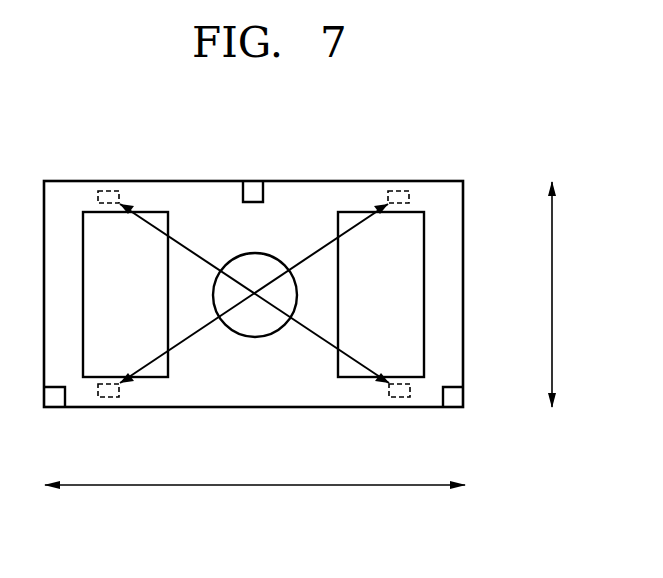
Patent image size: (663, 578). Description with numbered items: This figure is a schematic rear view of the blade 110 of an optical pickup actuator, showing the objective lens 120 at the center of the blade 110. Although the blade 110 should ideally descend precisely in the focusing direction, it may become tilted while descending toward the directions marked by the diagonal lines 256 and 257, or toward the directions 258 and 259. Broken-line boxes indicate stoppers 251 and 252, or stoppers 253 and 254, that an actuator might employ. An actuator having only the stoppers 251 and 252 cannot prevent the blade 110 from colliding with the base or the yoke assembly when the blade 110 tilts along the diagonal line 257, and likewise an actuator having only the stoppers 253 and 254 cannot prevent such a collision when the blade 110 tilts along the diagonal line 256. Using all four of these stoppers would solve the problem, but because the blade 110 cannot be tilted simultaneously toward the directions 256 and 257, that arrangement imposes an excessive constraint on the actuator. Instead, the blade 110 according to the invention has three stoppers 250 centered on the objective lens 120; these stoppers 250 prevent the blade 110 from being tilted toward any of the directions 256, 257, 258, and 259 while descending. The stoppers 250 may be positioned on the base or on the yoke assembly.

The blade 110 is at (465, 287).
The objective lens 120 is at (255, 323).
The stoppers 250 is at (255, 185).
The stopper 251 is at (110, 399).
The stopper 252 is at (400, 189).
The stopper 253 is at (398, 399).
The stopper 254 is at (112, 189).
The diagonal line 256 is at (323, 247).
The diagonal line 257 is at (188, 246).
The direction 258 is at (553, 297).
The direction 259 is at (253, 487).